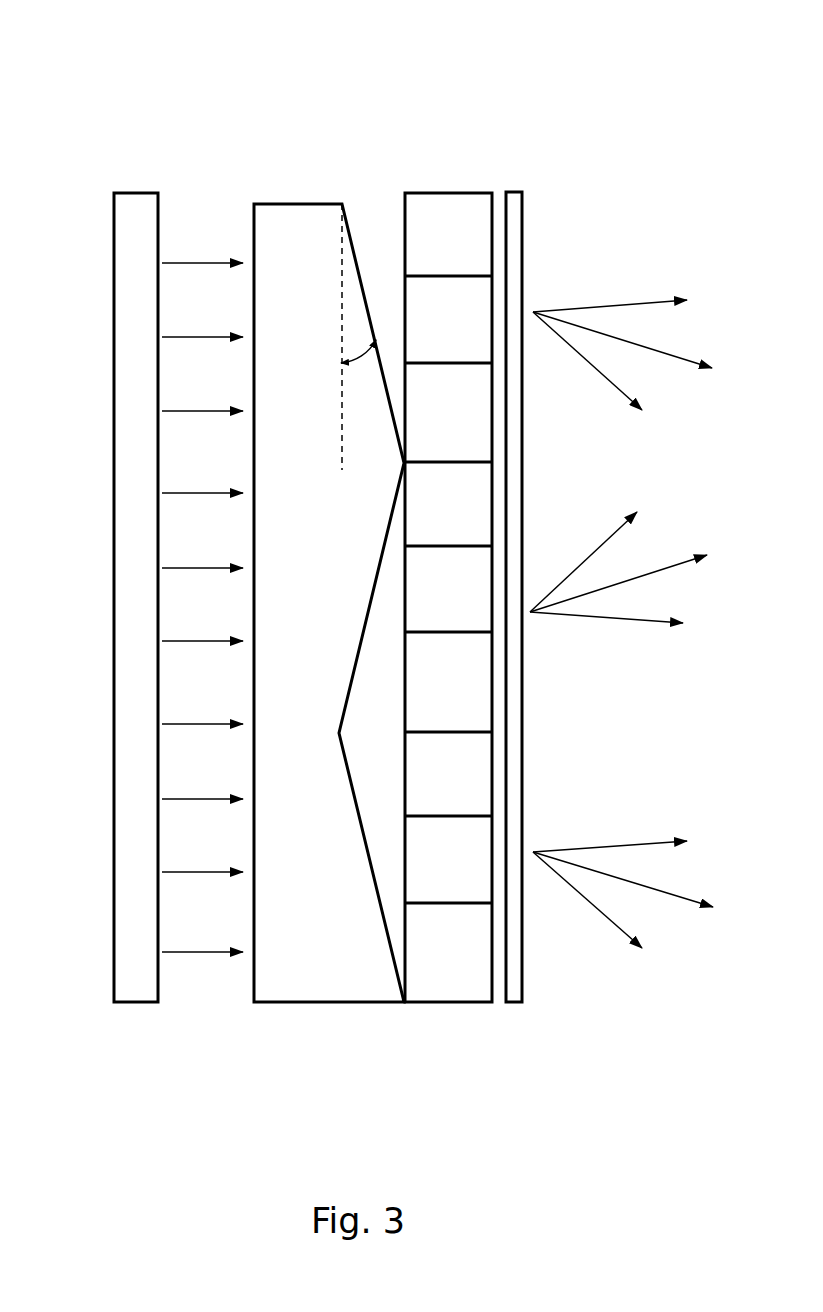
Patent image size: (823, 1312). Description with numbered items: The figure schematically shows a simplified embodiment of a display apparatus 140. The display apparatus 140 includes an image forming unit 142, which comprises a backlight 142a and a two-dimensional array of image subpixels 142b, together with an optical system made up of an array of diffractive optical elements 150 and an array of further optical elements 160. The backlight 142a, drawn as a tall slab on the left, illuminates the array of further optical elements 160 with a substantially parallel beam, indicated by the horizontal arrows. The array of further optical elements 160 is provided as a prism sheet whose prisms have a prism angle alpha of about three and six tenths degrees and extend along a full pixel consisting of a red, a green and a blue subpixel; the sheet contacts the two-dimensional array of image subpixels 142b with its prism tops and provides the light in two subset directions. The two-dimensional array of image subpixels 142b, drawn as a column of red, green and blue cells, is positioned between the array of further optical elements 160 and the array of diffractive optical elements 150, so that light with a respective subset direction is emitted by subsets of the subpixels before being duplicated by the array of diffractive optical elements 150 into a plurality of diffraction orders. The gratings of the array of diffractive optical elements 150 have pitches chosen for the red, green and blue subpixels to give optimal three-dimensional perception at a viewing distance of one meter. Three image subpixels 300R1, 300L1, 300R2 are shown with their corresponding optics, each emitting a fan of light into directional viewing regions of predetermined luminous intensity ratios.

The display apparatus 140 is at (98, 78).
The image forming unit 142 is at (515, 112).
The backlight 142a is at (128, 197).
The two-dimensional array of image subpixels 142b is at (437, 203).
The array of diffractive optical elements 150 is at (518, 993).
The array of further optical elements 160 is at (305, 990).
The image subpixel 300R1 is at (627, 297).
The image subpixel 300L1 is at (677, 528).
The image subpixel 300R2 is at (622, 805).